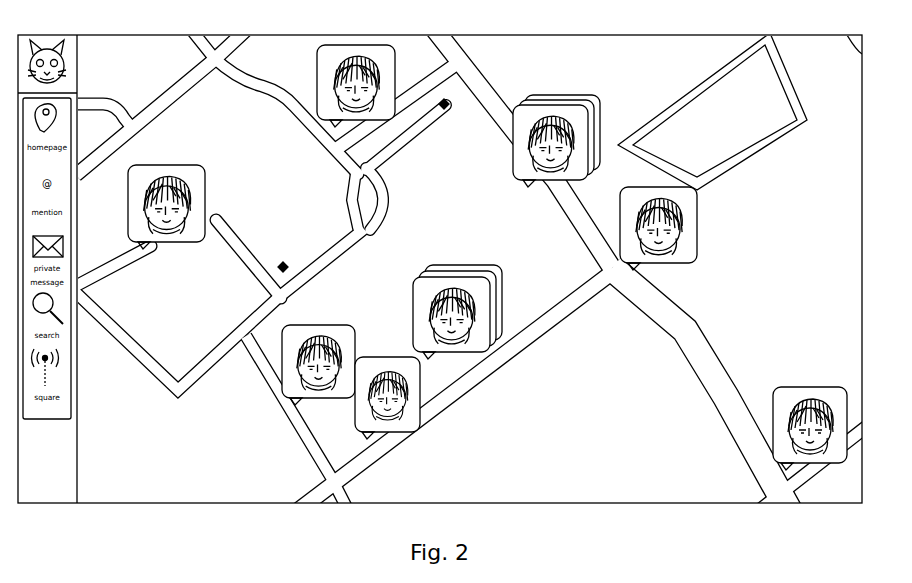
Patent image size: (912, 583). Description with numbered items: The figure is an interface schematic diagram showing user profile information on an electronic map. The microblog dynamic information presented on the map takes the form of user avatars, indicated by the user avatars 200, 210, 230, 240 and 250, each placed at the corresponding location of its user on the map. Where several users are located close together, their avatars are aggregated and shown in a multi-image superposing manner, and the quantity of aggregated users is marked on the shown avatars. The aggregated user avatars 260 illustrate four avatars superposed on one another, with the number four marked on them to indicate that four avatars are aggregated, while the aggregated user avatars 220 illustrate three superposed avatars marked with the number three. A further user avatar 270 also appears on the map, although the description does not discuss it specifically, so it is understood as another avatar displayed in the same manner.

The user avatar 200 is at (178, 165).
The user avatar 210 is at (383, 105).
The aggregated user avatars 220 is at (592, 100).
The user avatar 230 is at (698, 214).
The user avatar 240 is at (303, 326).
The user avatar 250 is at (408, 418).
The aggregated user avatars 260 is at (500, 267).
The nearby user avatar icon 270 is at (778, 388).